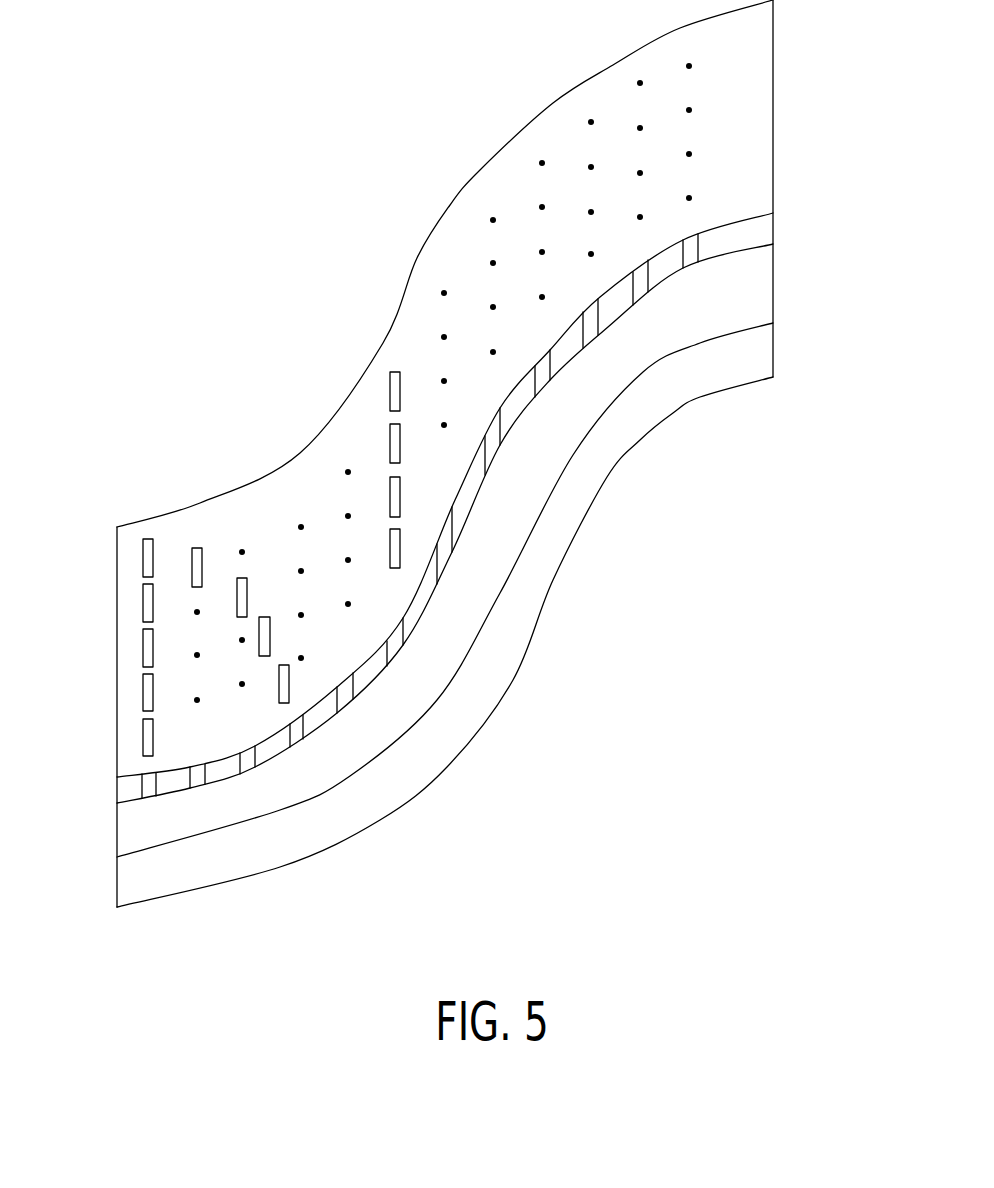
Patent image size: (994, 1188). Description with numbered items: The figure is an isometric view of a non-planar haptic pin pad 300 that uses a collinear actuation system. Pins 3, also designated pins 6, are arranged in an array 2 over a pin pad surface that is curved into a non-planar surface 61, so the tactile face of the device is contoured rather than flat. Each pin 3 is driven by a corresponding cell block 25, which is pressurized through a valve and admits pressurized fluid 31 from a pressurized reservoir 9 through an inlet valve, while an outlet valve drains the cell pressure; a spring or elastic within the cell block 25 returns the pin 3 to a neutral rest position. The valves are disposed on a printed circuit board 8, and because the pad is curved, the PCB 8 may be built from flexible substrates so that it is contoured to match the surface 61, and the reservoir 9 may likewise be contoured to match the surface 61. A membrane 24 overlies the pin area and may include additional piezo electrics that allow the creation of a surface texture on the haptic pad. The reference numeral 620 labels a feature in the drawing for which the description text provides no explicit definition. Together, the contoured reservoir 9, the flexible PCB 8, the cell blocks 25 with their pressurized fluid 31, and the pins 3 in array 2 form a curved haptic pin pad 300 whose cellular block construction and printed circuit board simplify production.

The non-planar haptic pin pad 300 is at (419, 478).
The curved surface 61 is at (553, 104).
The array 2 is at (444, 292).
The pin 3 is at (370, 431).
The pin 6 is at (395, 372).
The membrane 24 is at (199, 546).
The cell block 25 is at (419, 537).
The pressurized fluid 31 is at (297, 730).
The printed circuit board 8 is at (423, 616).
The pressurized reservoir 9 is at (368, 747).
The slit in band 620 is at (608, 327).